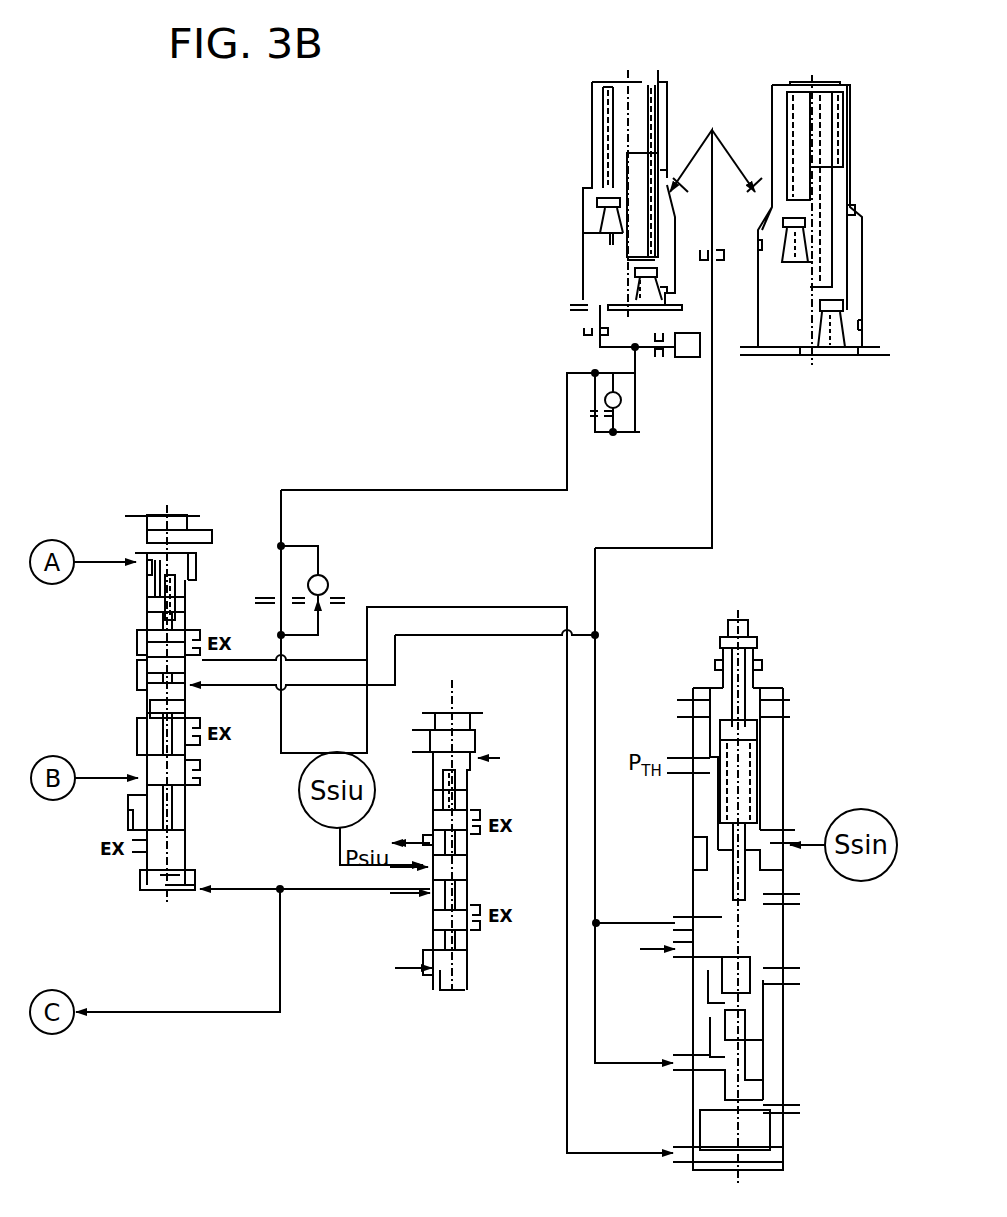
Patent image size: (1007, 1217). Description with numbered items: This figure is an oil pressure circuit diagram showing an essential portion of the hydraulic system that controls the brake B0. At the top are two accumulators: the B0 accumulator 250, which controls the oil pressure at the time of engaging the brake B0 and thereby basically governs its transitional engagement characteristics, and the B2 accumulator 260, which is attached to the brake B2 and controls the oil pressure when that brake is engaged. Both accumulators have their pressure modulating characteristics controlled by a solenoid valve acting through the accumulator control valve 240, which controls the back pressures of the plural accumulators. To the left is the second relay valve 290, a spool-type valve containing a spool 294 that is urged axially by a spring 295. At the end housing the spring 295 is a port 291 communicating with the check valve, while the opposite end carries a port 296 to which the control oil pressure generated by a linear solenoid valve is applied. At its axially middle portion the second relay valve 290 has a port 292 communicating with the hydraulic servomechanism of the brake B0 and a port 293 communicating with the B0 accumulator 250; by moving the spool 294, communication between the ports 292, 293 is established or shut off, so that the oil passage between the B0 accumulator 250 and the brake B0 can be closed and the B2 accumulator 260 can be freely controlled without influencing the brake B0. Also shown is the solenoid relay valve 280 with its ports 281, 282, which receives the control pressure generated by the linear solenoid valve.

The accumulator control valve 240 is at (765, 605).
The B0 accumulator 250 is at (610, 72).
The B2 accumulator 260 is at (777, 72).
The solenoid relay valve 280 is at (490, 735).
The port of lock-up control valve 281 is at (425, 872).
The port of lock-up control valve 282 is at (430, 892).
The second relay valve 290 is at (184, 489).
The port 291 is at (137, 568).
The port 292 is at (135, 790).
The port 293 is at (195, 762).
The spool 294 is at (150, 708).
The spring 295 is at (188, 578).
The port 296 is at (180, 892).